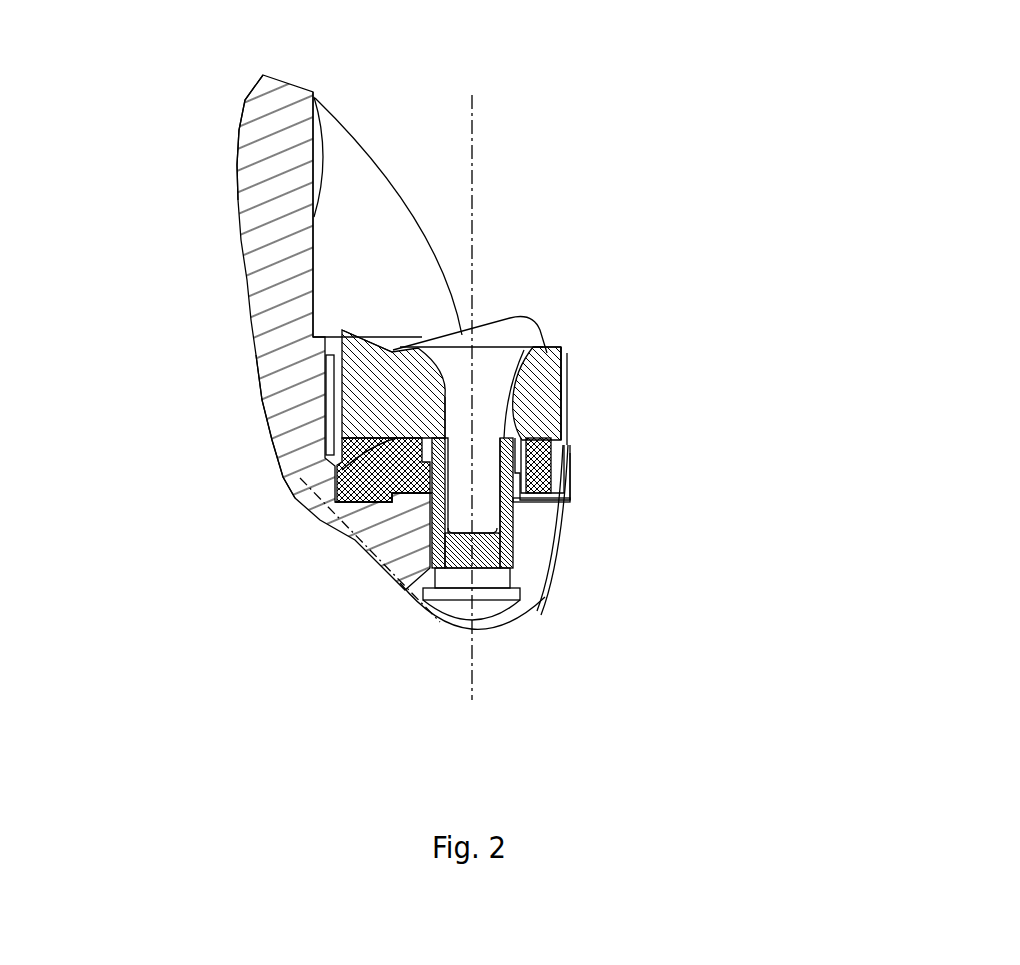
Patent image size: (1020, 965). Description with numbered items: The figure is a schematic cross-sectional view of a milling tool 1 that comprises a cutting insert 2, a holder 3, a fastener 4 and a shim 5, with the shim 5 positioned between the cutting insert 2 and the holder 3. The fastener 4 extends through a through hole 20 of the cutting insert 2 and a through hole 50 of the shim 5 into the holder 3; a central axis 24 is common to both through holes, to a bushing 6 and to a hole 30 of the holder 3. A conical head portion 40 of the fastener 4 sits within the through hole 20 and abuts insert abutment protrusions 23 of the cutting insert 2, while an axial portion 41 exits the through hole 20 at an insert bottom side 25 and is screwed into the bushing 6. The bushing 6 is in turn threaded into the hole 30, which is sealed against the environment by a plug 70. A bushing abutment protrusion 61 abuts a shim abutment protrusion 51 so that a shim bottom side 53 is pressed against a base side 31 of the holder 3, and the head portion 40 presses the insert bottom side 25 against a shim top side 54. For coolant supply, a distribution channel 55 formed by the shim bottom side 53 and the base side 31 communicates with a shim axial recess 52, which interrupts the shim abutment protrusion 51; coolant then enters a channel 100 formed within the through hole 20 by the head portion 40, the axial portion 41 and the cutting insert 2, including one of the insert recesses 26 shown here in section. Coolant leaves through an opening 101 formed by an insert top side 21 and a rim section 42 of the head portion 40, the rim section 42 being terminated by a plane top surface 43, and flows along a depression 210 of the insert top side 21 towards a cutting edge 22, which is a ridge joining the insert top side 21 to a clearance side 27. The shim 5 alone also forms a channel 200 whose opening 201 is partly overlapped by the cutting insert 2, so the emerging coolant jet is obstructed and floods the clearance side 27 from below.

The milling tool 1 is at (718, 110).
The cutting insert 2 is at (323, 225).
The holder 3 is at (288, 202).
The fastener 4 is at (590, 184).
The shim 5 is at (622, 466).
The bushing 6 is at (621, 563).
The through hole 20 is at (563, 378).
The insert top side 21 is at (383, 356).
The cutting edge 22 is at (644, 353).
The insert abutment protrusions 23 is at (148, 191).
The central axis 24 is at (568, 396).
The insert bottom side 25 is at (328, 349).
The insert recesses 26 is at (625, 366).
The clearance side 27 is at (662, 376).
The hole 30 is at (558, 659).
The base side 31 is at (292, 401).
The head portion 40 is at (515, 363).
The axial portion 41 is at (535, 344).
The rim section 42 is at (367, 287).
The plane top surface 43 is at (452, 179).
The through hole 50 is at (606, 530).
The shim abutment protrusion 51 is at (355, 545).
The shim axial recess 52 is at (654, 489).
The shim bottom side 53 is at (328, 517).
The shim top side 54 is at (333, 502).
The distribution channel 55 is at (382, 617).
The bushing abutment protrusion 61 is at (565, 453).
The plug 70 is at (406, 677).
The channel 100 is at (563, 400).
The opening 101 is at (672, 288).
The channel 200 is at (642, 488).
The opening 201 is at (684, 440).
The depression 210 is at (380, 268).